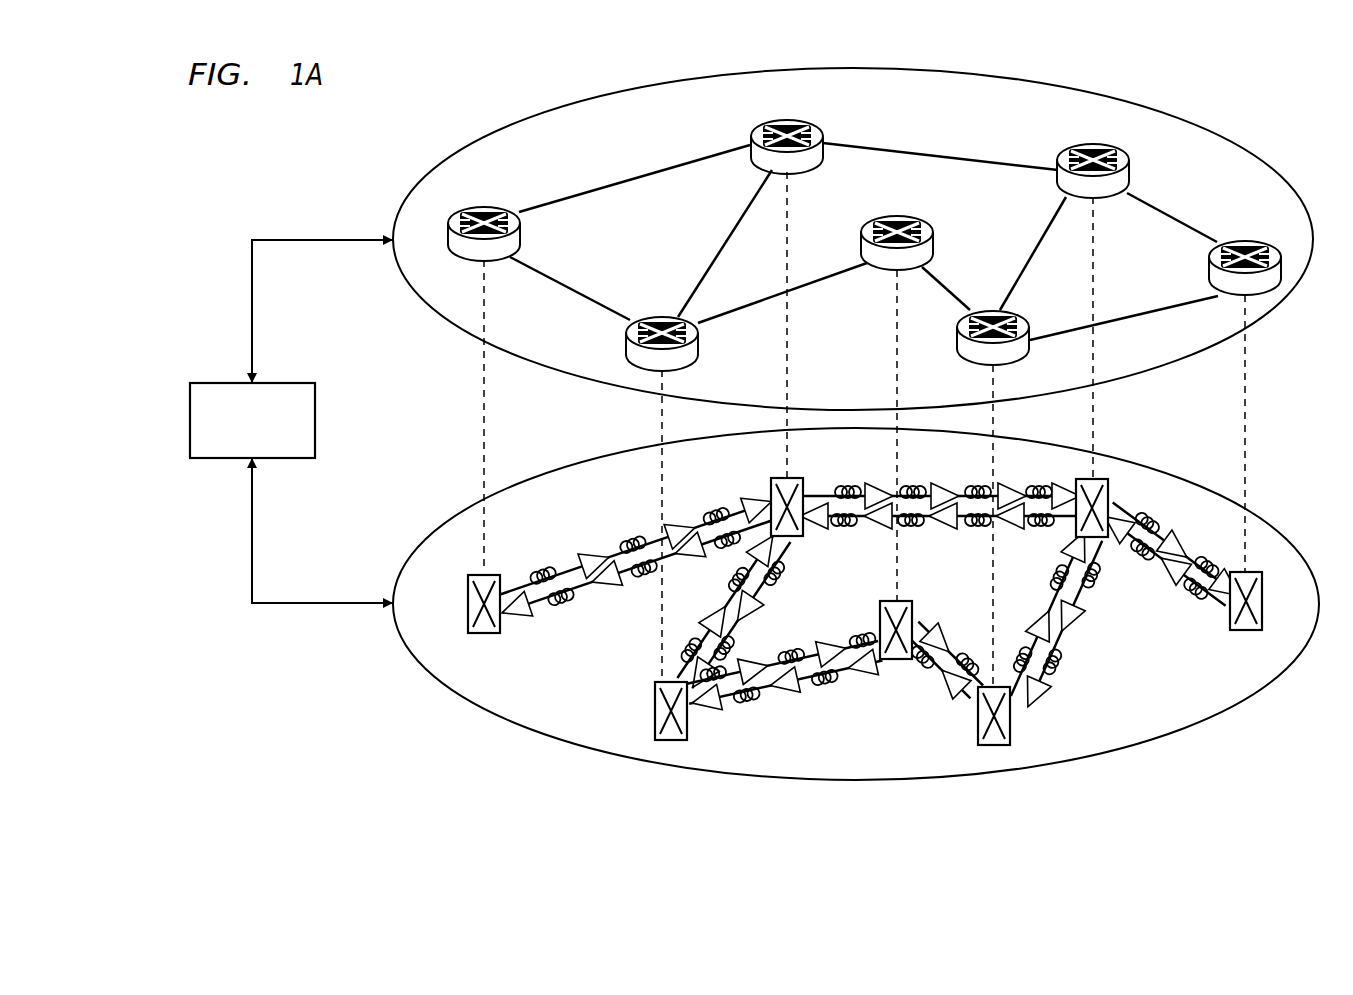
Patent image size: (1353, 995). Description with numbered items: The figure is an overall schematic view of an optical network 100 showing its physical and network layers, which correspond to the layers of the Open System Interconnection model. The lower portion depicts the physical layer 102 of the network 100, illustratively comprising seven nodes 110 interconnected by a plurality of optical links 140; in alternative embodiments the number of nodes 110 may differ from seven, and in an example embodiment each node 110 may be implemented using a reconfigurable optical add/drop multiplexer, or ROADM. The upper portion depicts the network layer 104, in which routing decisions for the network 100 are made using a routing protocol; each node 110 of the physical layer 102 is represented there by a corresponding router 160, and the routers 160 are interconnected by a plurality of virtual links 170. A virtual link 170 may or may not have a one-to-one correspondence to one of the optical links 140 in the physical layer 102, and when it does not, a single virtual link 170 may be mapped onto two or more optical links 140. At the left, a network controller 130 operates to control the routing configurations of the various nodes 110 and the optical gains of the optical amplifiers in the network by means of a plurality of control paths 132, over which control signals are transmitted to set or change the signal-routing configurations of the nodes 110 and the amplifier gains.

The optical network 100 is at (271, 127).
The physical layer 102 is at (662, 758).
The network layer 104 is at (955, 72).
The node 110 is at (1230, 623).
The network controller 130 is at (316, 421).
The control path 132 is at (253, 545).
The optical link 140 is at (597, 605).
The router 160 is at (523, 230).
The virtual link 170 is at (648, 166).